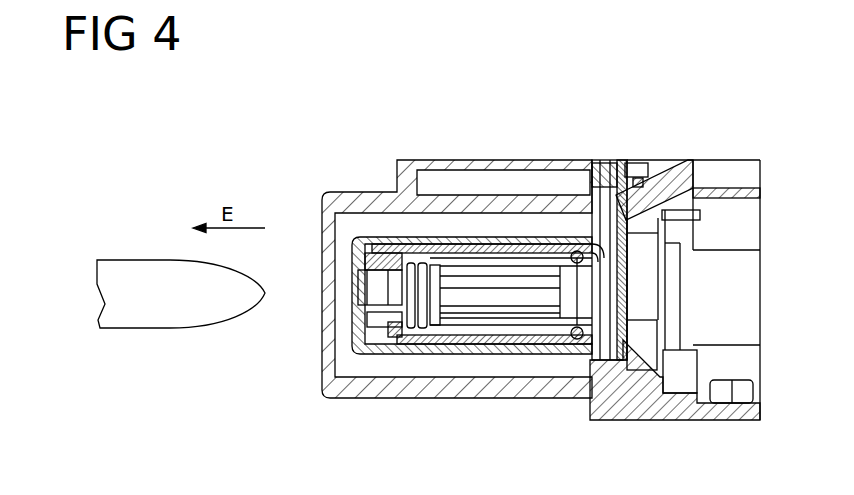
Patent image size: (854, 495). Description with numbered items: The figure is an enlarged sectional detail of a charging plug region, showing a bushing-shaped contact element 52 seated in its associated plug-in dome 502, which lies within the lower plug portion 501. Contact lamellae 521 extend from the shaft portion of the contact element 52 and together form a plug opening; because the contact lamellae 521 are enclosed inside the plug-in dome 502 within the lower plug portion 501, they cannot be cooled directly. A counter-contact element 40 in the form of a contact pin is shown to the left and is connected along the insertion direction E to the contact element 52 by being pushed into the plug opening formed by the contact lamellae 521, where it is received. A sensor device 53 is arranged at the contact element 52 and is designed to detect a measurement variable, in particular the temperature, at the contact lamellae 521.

The counter-contact element 40 is at (155, 316).
The lower plug portion 501 is at (447, 392).
The plug-in dome 502 is at (357, 340).
The contact element 52 is at (515, 322).
The contact lamellae 521 is at (527, 300).
The sensor device 53 is at (461, 250).